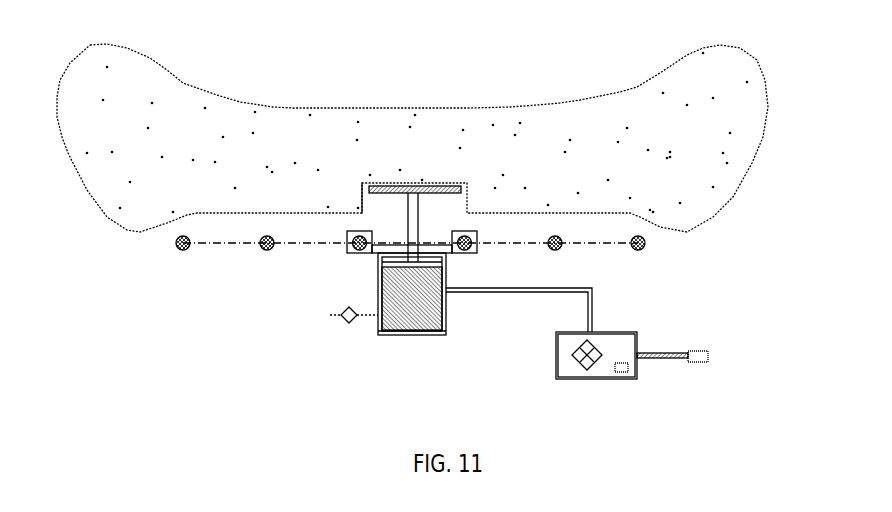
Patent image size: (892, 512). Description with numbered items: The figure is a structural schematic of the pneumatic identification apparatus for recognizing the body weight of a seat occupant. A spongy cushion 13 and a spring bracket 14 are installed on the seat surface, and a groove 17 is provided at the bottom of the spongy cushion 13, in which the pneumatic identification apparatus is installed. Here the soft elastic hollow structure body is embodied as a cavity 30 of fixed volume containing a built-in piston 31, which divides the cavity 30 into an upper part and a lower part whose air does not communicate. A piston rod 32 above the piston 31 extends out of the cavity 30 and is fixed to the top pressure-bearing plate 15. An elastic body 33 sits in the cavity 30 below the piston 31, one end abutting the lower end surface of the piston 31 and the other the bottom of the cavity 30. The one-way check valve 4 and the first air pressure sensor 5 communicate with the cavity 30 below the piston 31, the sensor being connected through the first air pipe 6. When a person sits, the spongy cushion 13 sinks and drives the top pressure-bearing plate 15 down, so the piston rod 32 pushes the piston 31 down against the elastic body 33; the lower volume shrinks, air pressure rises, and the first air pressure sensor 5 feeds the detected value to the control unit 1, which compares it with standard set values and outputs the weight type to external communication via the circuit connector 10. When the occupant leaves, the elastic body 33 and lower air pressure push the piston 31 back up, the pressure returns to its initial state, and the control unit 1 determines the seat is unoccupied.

The spongy cushion 13 is at (713, 82).
The top pressure-bearing plate 15 is at (450, 188).
The spring bracket 14 is at (177, 247).
The groove 17 is at (358, 212).
The piston rod 32 is at (412, 215).
The piston 31 is at (442, 290).
The cavity 30 is at (410, 335).
The elastic body 33 is at (378, 333).
The one-way check valve 4 is at (340, 318).
The first air pipe 6 is at (563, 293).
The control unit 1 is at (603, 378).
The first air pressure sensor 5 is at (577, 358).
The circuit connector 10 is at (707, 362).